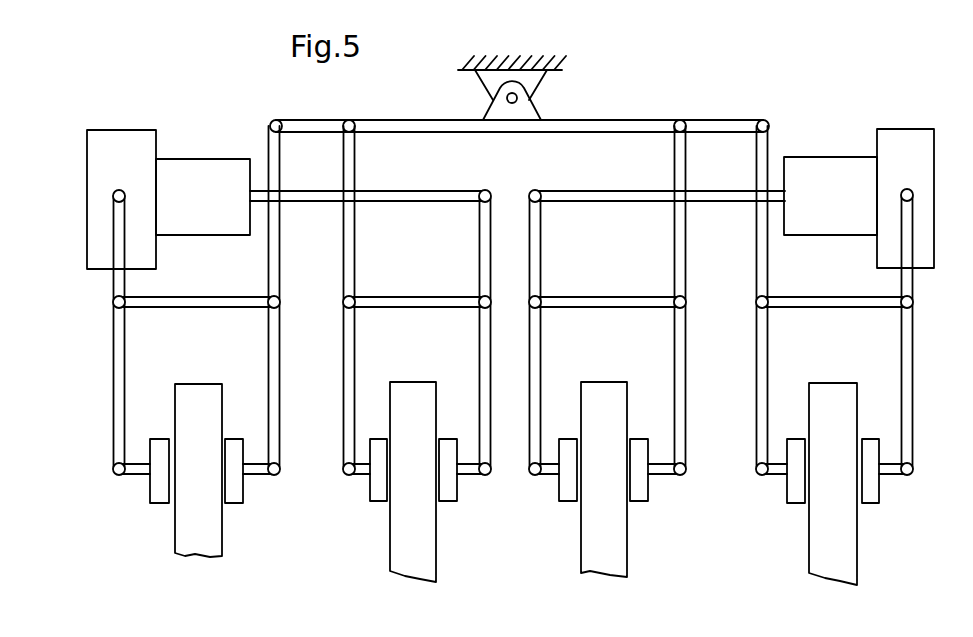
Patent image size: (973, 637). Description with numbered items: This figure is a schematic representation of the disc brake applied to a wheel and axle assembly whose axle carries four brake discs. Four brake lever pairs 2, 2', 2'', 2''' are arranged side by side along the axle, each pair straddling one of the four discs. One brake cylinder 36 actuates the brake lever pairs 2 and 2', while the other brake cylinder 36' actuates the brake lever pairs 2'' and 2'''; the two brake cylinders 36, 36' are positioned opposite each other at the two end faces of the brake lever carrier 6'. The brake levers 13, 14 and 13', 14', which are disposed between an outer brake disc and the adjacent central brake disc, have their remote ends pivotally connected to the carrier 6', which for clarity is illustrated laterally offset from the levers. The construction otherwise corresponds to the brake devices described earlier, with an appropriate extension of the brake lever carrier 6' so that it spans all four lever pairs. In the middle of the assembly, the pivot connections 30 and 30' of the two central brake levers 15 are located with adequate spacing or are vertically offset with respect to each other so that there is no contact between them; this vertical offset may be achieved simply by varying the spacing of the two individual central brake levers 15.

The brake lever pair 2 is at (628, 351).
The brake lever pair 2' is at (862, 355).
The brake lever pair 2'' is at (433, 354).
The brake lever pair 2''' is at (218, 341).
The brake lever carrier 6' is at (519, 100).
The brake lever 13 is at (654, 297).
The brake lever 13' is at (383, 297).
The brake lever 14 is at (794, 297).
The brake lever 14' is at (244, 297).
The central brake lever 15 is at (479, 399).
The pivot connection 30 is at (570, 220).
The pivot connection 30' is at (453, 220).
The brake cylinder 36 is at (859, 179).
The brake cylinder 36' is at (168, 178).